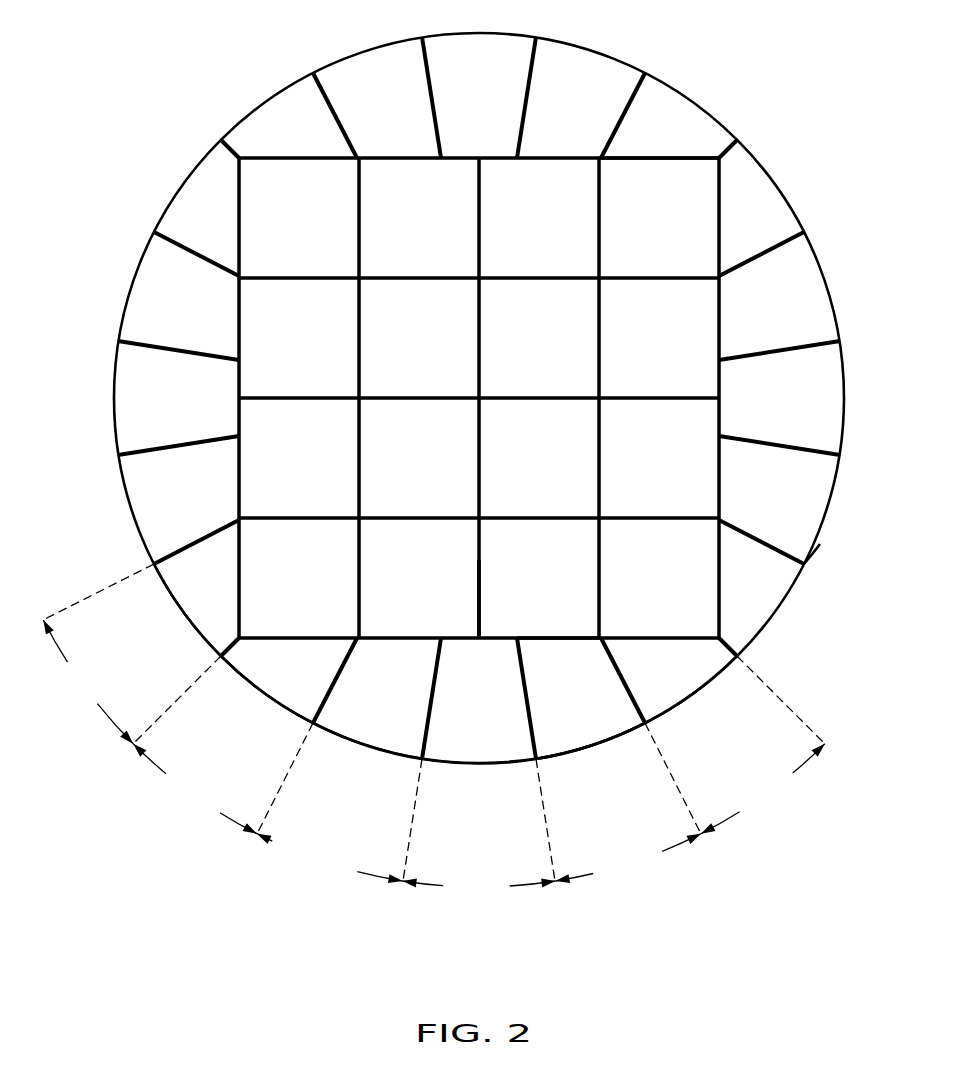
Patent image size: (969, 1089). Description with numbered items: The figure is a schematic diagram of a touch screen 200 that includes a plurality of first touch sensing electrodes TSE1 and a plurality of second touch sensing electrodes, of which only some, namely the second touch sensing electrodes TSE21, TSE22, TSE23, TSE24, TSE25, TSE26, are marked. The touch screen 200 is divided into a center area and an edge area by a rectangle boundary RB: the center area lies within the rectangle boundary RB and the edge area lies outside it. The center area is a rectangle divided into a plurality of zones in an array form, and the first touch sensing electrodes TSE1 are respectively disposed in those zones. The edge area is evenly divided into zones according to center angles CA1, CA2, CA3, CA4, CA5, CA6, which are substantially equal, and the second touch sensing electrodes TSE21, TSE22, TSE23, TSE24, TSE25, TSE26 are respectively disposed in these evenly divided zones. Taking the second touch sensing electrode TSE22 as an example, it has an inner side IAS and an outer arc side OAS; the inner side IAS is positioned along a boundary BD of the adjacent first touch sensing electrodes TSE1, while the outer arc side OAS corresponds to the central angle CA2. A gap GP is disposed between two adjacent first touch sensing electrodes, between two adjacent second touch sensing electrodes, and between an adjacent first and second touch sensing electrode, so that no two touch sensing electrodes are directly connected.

The touch screen 200 is at (795, 937).
The first touch sensing electrode TSE1 is at (479, 398).
The second touch sensing electrode TSE21 is at (480, 750).
The second touch sensing electrode TSE22 is at (565, 740).
The second touch sensing electrode TSE23 is at (687, 682).
The second touch sensing electrode TSE24 is at (370, 733).
The second touch sensing electrode TSE25 is at (272, 682).
The second touch sensing electrode TSE26 is at (193, 603).
The center angle CA1 is at (479, 829).
The center angle CA2 is at (618, 821).
The center angle CA3 is at (735, 745).
The center angle CA4 is at (330, 803).
The center angle CA5 is at (195, 745).
The center angle CA6 is at (98, 654).
The rectangle boundary RB is at (668, 144).
The boundary BD is at (501, 624).
The inner side IAS is at (557, 645).
The outer arc side OAS is at (631, 744).
The gap GP is at (818, 568).